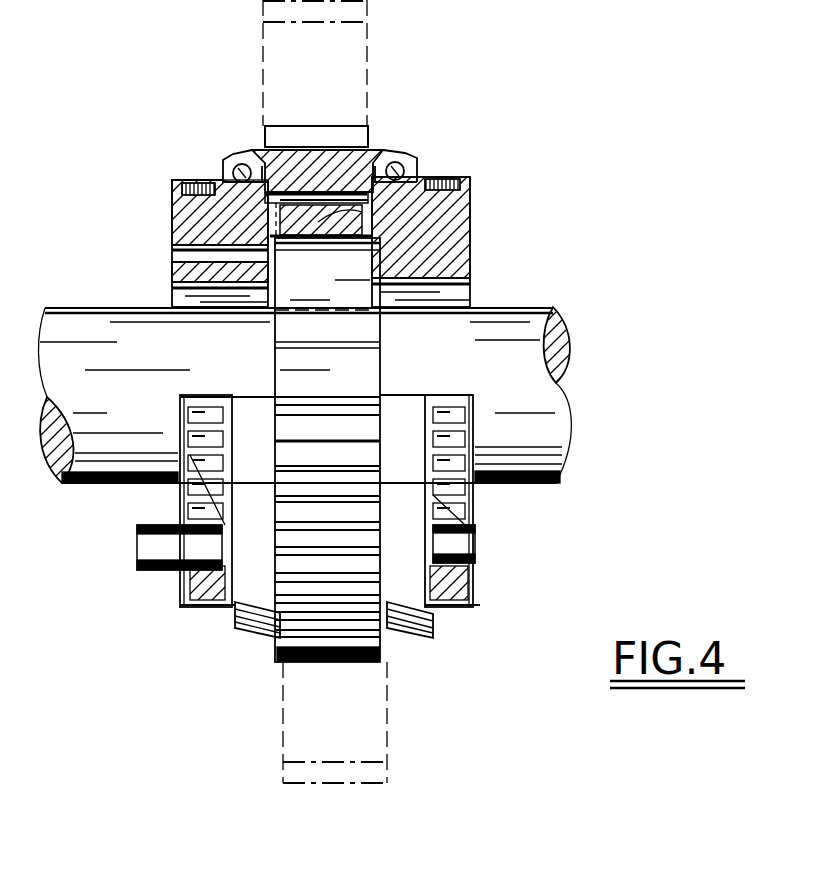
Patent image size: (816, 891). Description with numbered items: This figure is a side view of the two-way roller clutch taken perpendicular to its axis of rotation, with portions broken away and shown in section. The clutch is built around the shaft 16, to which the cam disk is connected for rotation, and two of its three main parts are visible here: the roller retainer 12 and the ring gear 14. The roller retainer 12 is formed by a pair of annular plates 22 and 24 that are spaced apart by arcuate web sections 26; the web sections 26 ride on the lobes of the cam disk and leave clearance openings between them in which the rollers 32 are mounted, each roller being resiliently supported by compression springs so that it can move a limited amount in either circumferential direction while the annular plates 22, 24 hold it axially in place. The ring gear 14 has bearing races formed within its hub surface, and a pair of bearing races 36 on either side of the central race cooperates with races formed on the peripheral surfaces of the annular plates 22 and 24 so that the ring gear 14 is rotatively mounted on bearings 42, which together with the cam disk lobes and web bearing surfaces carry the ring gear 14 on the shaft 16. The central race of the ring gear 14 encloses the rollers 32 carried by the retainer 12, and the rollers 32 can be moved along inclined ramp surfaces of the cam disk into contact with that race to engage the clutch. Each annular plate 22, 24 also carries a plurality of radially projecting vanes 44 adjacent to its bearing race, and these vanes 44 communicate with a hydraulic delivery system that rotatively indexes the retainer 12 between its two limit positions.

The roller retainer 12 is at (250, 638).
The ring gear 14 is at (353, 635).
The shaft 16 is at (197, 359).
The annular plate 22 is at (175, 219).
The annular plate 24 is at (443, 257).
The arcuate web sections 26 is at (363, 212).
The rollers 32 is at (360, 153).
The bearing races 36 is at (223, 178).
The bearings 42 is at (240, 163).
The radially projecting vanes 44 is at (213, 465).